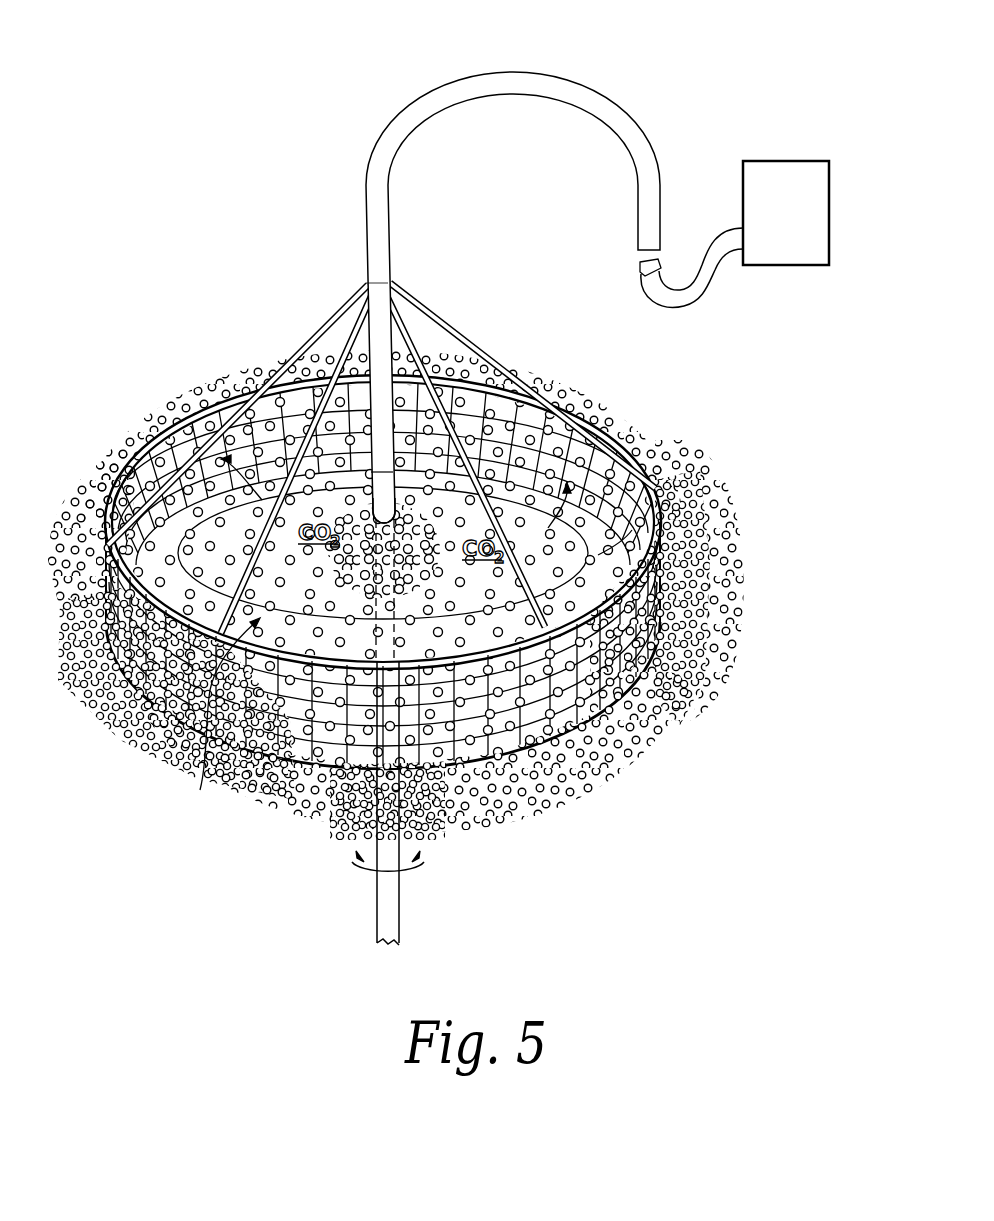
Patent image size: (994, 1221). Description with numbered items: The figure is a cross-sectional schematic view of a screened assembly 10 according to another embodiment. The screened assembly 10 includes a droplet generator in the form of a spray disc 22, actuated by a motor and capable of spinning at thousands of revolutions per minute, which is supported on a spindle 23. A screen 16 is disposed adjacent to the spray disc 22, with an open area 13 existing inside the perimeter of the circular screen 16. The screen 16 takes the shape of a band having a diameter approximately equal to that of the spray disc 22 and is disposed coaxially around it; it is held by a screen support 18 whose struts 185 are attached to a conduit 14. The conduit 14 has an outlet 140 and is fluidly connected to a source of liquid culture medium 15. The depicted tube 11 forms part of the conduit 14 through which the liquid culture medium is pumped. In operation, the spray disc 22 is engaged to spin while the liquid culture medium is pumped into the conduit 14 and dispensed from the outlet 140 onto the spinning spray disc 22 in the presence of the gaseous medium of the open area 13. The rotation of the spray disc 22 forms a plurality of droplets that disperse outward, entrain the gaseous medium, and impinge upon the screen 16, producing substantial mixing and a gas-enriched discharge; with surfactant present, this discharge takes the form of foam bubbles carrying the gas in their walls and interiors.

The screened assembly 10 is at (282, 198).
The tube 11 is at (437, 100).
The conduit 14 is at (546, 68).
The source of liquid culture medium 15 is at (799, 227).
The screen support 18 is at (279, 341).
The struts 185 is at (477, 332).
The outlet 140 is at (358, 503).
The open area 13 is at (658, 465).
The screen 16 is at (667, 548).
The spray disc 22 is at (200, 790).
The spindle 23 is at (401, 926).